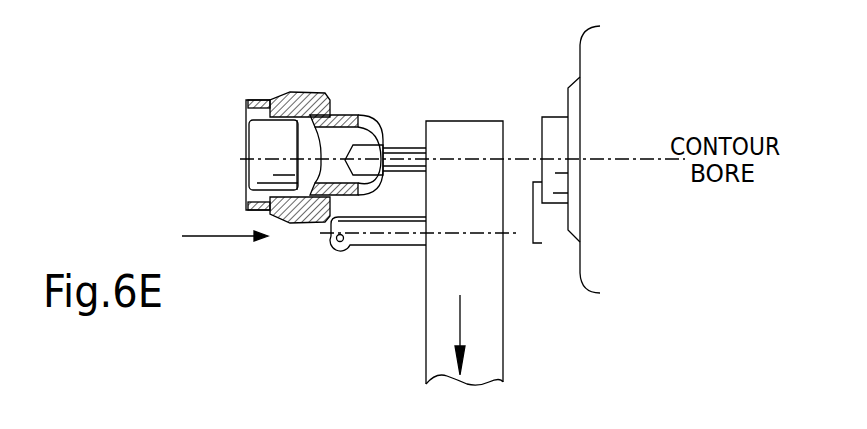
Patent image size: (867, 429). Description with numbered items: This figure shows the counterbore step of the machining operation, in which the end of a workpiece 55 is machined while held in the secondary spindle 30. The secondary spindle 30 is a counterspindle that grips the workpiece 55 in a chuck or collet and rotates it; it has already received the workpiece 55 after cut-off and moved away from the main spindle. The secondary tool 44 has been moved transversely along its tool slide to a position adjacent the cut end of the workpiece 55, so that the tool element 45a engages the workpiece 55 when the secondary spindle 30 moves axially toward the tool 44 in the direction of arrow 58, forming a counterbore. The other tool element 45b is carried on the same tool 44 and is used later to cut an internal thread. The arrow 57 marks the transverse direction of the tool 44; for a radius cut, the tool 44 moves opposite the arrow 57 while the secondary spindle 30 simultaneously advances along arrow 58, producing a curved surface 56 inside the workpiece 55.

The secondary spindle 30 is at (292, 92).
The workpiece 55 is at (360, 116).
The curved surface 56 is at (392, 142).
The tool element 45a is at (421, 146).
The secondary tool 44 is at (478, 121).
The arrow 57 is at (460, 322).
The tool element 45b is at (392, 247).
The arrow 58 is at (212, 234).